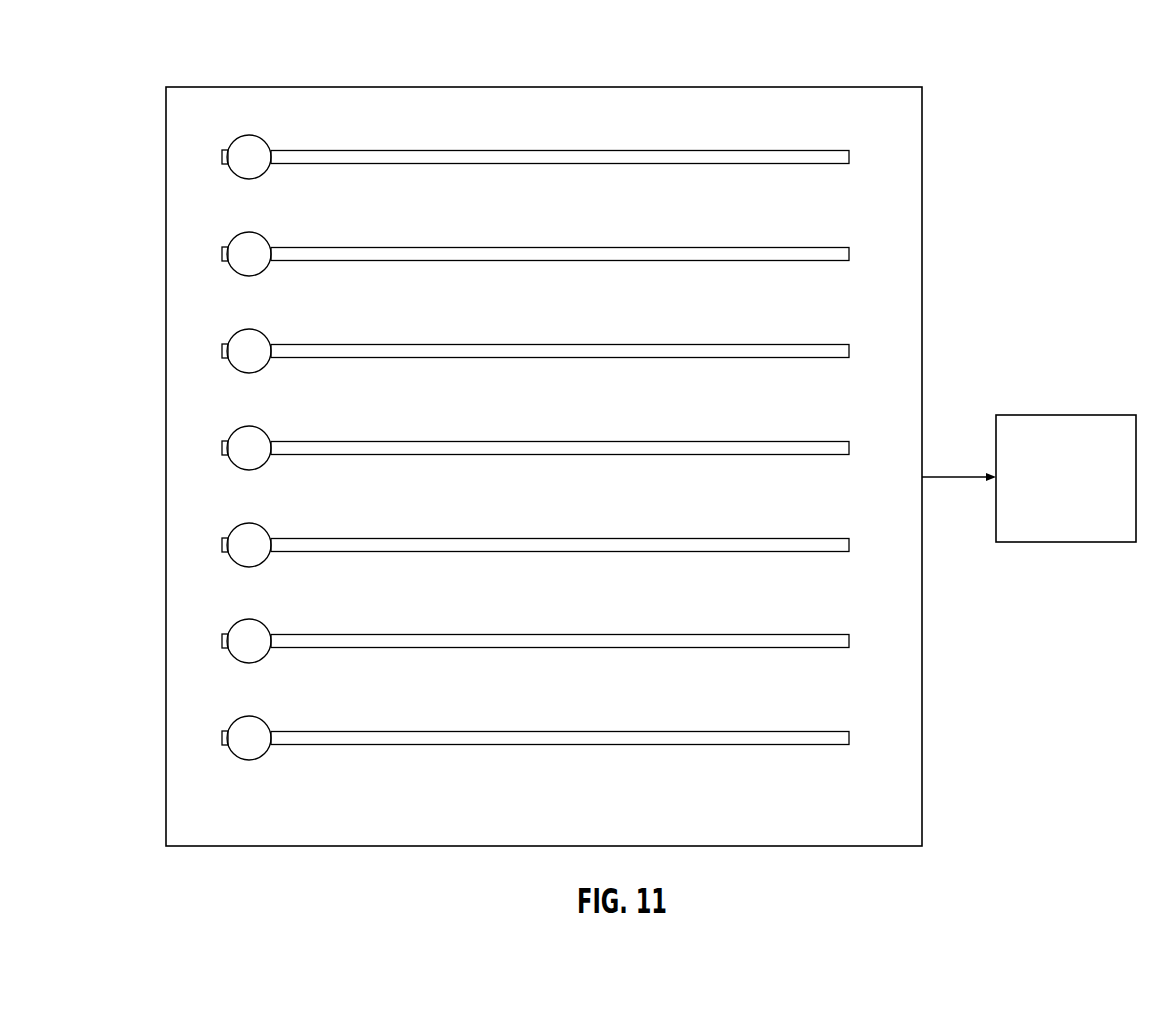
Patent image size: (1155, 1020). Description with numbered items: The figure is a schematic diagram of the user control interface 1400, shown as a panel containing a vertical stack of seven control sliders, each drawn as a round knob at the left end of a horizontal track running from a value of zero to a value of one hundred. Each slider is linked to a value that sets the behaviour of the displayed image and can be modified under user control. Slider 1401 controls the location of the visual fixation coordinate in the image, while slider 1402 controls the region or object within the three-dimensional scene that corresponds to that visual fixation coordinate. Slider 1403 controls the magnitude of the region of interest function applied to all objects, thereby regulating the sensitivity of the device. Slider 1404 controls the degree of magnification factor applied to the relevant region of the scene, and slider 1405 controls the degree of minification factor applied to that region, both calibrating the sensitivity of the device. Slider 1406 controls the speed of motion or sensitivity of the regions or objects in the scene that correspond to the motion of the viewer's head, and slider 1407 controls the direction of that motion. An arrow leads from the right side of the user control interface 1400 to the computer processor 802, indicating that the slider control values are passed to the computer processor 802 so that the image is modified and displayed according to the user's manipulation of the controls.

The user control interface 1400 is at (963, 60).
The slider 1401 is at (188, 152).
The slider 1402 is at (188, 249).
The slider 1403 is at (188, 346).
The slider 1404 is at (188, 443).
The slider 1405 is at (188, 540).
The slider 1406 is at (188, 636).
The slider 1407 is at (188, 733).
The Central Processor 802 is at (1066, 412).